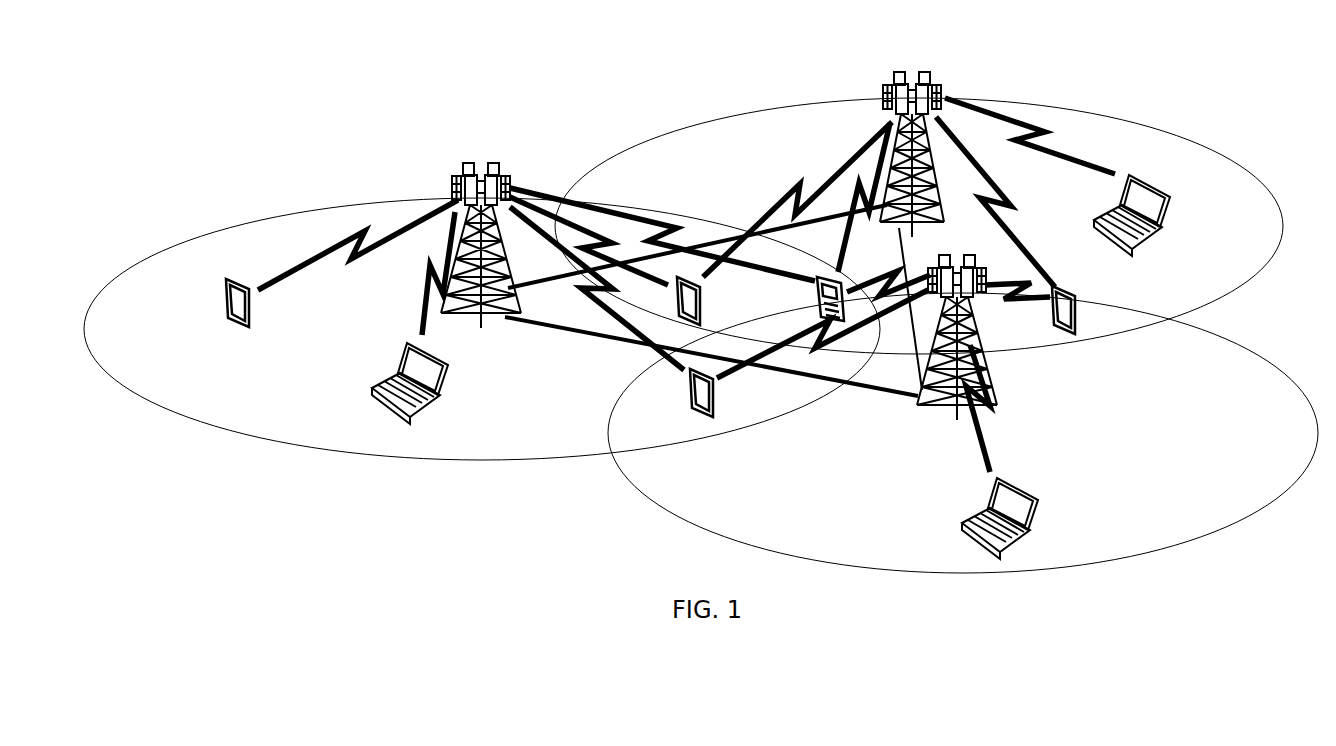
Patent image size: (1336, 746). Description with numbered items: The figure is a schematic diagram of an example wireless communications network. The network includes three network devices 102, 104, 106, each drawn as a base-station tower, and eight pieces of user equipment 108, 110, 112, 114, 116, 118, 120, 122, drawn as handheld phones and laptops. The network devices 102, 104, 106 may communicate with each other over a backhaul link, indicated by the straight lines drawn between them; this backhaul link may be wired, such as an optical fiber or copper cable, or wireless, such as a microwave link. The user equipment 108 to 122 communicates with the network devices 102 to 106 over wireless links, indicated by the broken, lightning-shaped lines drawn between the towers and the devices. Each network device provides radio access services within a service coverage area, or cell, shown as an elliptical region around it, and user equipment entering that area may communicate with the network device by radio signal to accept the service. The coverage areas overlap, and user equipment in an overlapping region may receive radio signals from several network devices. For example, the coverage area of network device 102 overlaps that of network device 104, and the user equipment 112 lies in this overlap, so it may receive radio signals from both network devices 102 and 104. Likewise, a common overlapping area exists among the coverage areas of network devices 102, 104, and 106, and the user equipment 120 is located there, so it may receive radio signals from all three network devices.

The network device 102 is at (460, 166).
The network device 104 is at (938, 256).
The network device 106 is at (915, 72).
The user equipment 108 is at (252, 312).
The user equipment 110 is at (451, 366).
The user equipment 112 is at (689, 395).
The user equipment 114 is at (1046, 497).
The user equipment 116 is at (1078, 306).
The user equipment 118 is at (1178, 192).
The user equipment 120 is at (816, 302).
The user equipment 122 is at (706, 300).